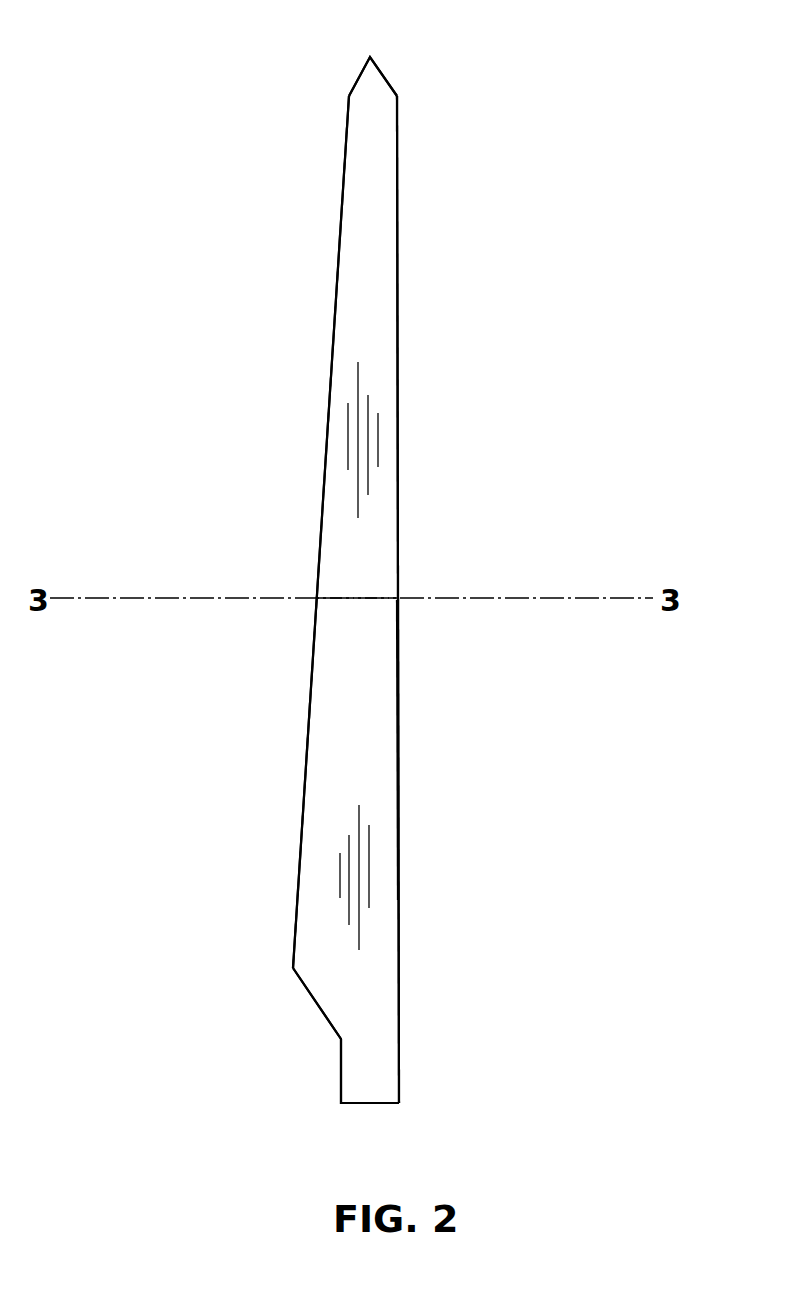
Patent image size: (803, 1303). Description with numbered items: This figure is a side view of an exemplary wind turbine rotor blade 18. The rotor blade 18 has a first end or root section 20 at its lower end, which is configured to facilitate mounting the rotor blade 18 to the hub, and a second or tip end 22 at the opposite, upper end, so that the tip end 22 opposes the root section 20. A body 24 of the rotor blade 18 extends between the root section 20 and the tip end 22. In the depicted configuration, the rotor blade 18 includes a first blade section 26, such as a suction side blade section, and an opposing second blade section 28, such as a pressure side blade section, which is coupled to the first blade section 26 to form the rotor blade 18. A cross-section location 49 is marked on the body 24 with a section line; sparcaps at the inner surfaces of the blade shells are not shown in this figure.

The rotor blade 18 is at (574, 110).
The root section 20 is at (390, 1083).
The tip end 22 is at (370, 57).
The body 24 is at (422, 776).
The first blade section 26 is at (397, 372).
The second blade section 28 is at (305, 827).
The cross-section location 49 is at (375, 598).